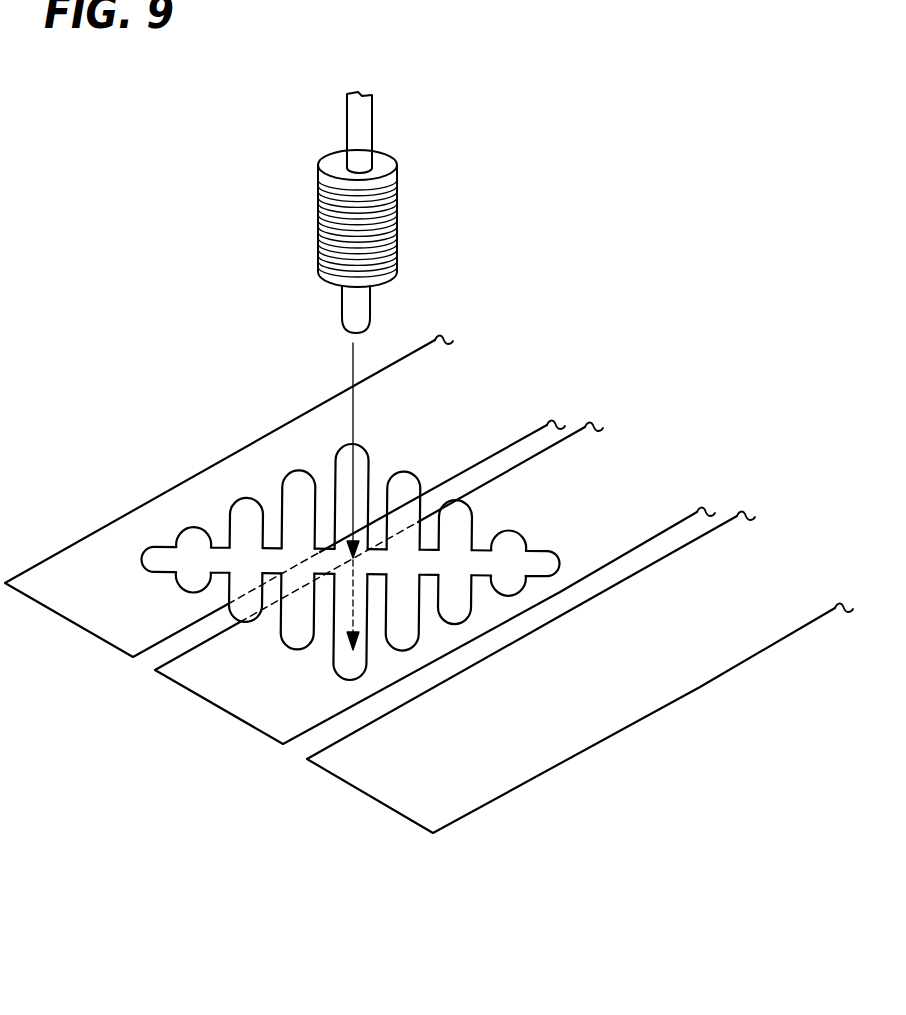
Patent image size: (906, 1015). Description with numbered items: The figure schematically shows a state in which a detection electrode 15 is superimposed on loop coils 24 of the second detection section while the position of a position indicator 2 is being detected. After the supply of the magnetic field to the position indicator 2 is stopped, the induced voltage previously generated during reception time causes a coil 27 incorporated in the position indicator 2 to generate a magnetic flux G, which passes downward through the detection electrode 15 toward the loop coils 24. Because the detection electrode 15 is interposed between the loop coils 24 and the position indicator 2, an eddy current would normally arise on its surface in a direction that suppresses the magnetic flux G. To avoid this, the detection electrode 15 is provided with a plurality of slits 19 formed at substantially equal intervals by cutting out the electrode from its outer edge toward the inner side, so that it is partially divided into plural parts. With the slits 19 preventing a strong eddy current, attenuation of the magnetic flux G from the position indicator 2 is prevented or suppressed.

The position indicator 2 is at (408, 212).
The coil 27 is at (383, 236).
The detection electrode 15 is at (350, 526).
The slits 19 is at (327, 547).
The loop coils 24 is at (100, 640).
The magnetic flux G is at (353, 361).